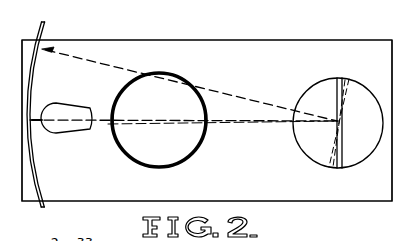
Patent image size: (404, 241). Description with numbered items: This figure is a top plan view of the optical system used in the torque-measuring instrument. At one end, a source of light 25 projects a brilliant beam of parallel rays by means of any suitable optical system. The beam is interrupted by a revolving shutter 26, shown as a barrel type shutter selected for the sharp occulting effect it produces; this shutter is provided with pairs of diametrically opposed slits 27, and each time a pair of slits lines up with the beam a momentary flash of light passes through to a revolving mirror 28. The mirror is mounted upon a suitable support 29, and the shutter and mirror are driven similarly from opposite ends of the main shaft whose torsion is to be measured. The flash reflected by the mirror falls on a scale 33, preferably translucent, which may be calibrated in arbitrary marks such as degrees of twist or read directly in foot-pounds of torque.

The source of light 25 is at (55, 111).
The revolving shutter 26 is at (172, 167).
The slits 27 is at (115, 120).
The revolving mirror 28 is at (343, 157).
The support 29 is at (293, 199).
The scale 33 is at (44, 29).